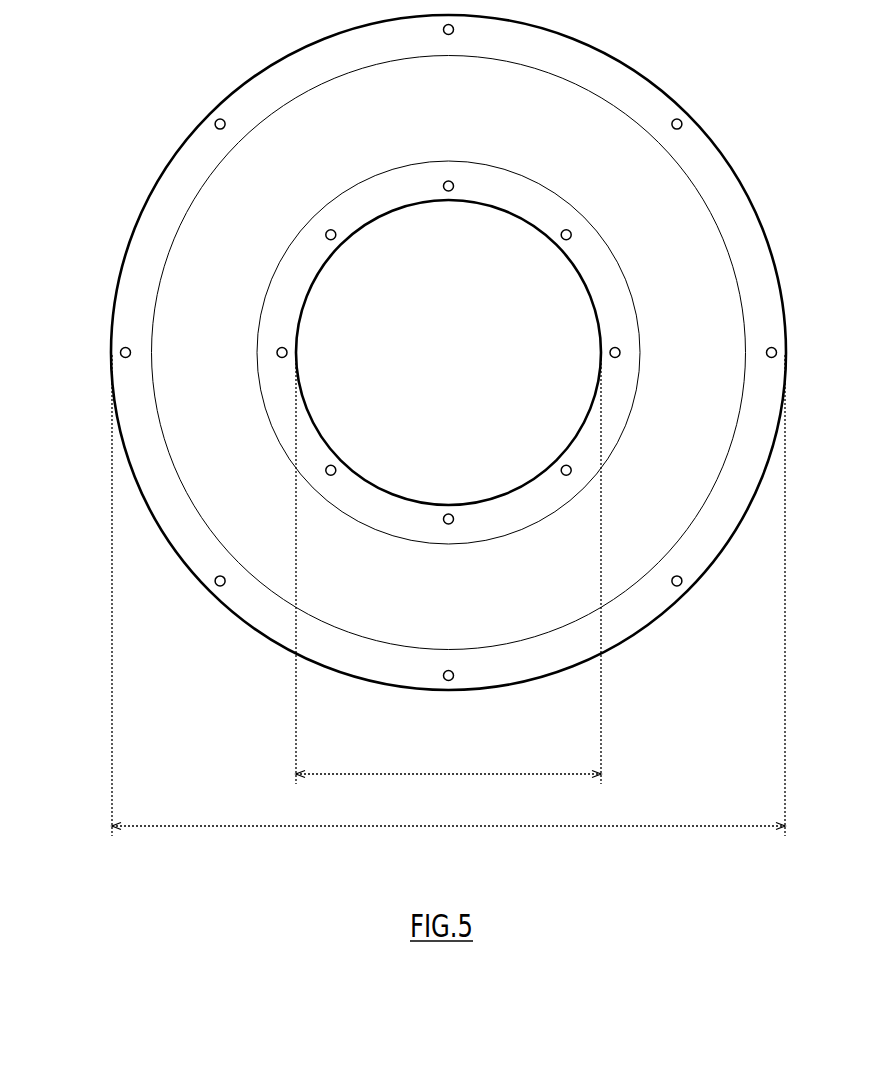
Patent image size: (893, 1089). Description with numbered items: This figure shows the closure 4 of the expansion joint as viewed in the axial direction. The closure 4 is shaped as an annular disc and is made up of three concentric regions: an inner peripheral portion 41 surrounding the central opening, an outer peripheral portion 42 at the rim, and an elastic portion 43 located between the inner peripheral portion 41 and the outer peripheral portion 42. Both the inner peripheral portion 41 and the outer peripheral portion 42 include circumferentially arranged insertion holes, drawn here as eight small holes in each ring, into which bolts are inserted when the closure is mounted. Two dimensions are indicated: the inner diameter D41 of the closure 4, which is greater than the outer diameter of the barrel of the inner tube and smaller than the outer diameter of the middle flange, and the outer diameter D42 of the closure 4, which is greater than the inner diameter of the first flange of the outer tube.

The closure 4 is at (112, 219).
The inner peripheral portion 41 is at (603, 288).
The outer peripheral portion 42 is at (260, 107).
The elastic portion 43 is at (588, 138).
The inner diameter of the closure D41 is at (448, 569).
The outer diameter of the closure D42 is at (448, 595).